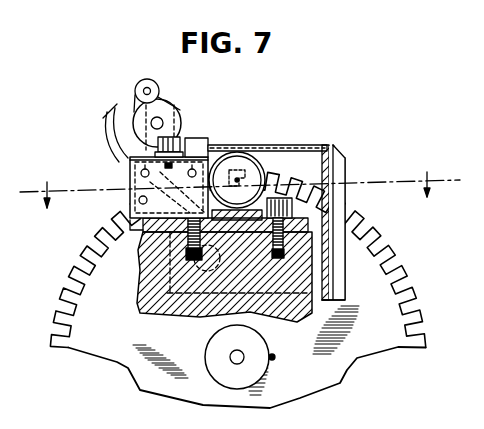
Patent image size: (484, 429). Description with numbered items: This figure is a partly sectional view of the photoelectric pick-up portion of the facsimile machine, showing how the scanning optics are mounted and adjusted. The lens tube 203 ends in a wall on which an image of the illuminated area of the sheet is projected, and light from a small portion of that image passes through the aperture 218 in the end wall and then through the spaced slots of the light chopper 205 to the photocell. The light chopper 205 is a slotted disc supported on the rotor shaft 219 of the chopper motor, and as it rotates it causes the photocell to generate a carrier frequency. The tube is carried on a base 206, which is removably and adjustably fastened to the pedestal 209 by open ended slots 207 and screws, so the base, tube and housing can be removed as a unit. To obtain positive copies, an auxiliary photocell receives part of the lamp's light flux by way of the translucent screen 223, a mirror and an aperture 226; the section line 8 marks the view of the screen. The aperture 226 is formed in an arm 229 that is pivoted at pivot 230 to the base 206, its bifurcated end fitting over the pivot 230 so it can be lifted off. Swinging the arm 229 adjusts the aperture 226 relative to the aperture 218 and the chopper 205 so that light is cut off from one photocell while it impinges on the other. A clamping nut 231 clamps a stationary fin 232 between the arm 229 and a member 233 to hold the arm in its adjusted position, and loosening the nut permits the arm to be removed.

The section line 8- 8 is at (240, 181).
The lens tube 203 is at (262, 172).
The light chopper 205 is at (118, 357).
The base 206 is at (307, 226).
The open ended slot 207 is at (217, 259).
The pedestal 209 is at (197, 317).
The aperture 218 is at (238, 179).
The rotor shaft 219 is at (236, 359).
The translucent screen 223 is at (130, 202).
The aperture 226 is at (130, 184).
The arm 229 is at (130, 228).
The pivot 230 is at (208, 271).
The clamping nut 231 is at (181, 108).
The stationary fin 232 is at (197, 140).
The member 233 is at (163, 96).